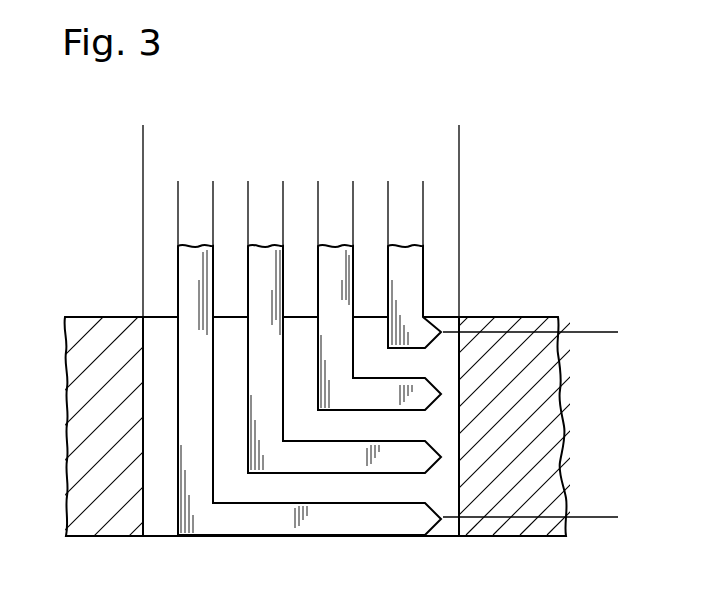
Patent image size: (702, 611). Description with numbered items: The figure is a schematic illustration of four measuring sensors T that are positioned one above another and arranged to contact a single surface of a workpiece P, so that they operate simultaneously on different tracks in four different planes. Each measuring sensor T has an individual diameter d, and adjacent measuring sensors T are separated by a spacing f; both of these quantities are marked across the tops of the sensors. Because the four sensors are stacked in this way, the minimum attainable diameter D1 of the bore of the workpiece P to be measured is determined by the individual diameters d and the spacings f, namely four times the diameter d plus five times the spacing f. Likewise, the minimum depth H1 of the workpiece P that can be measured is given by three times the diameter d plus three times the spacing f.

The measuring sensors T is at (260, 273).
The workpiece P is at (113, 324).
The minimum attainable diameter of the bore D1 is at (143, 133).
The spacing between adjacent measuring sensors f is at (459, 189).
The individual diameter of the measuring sensors d is at (178, 209).
The minimum depth of the workpiece H1 is at (618, 517).